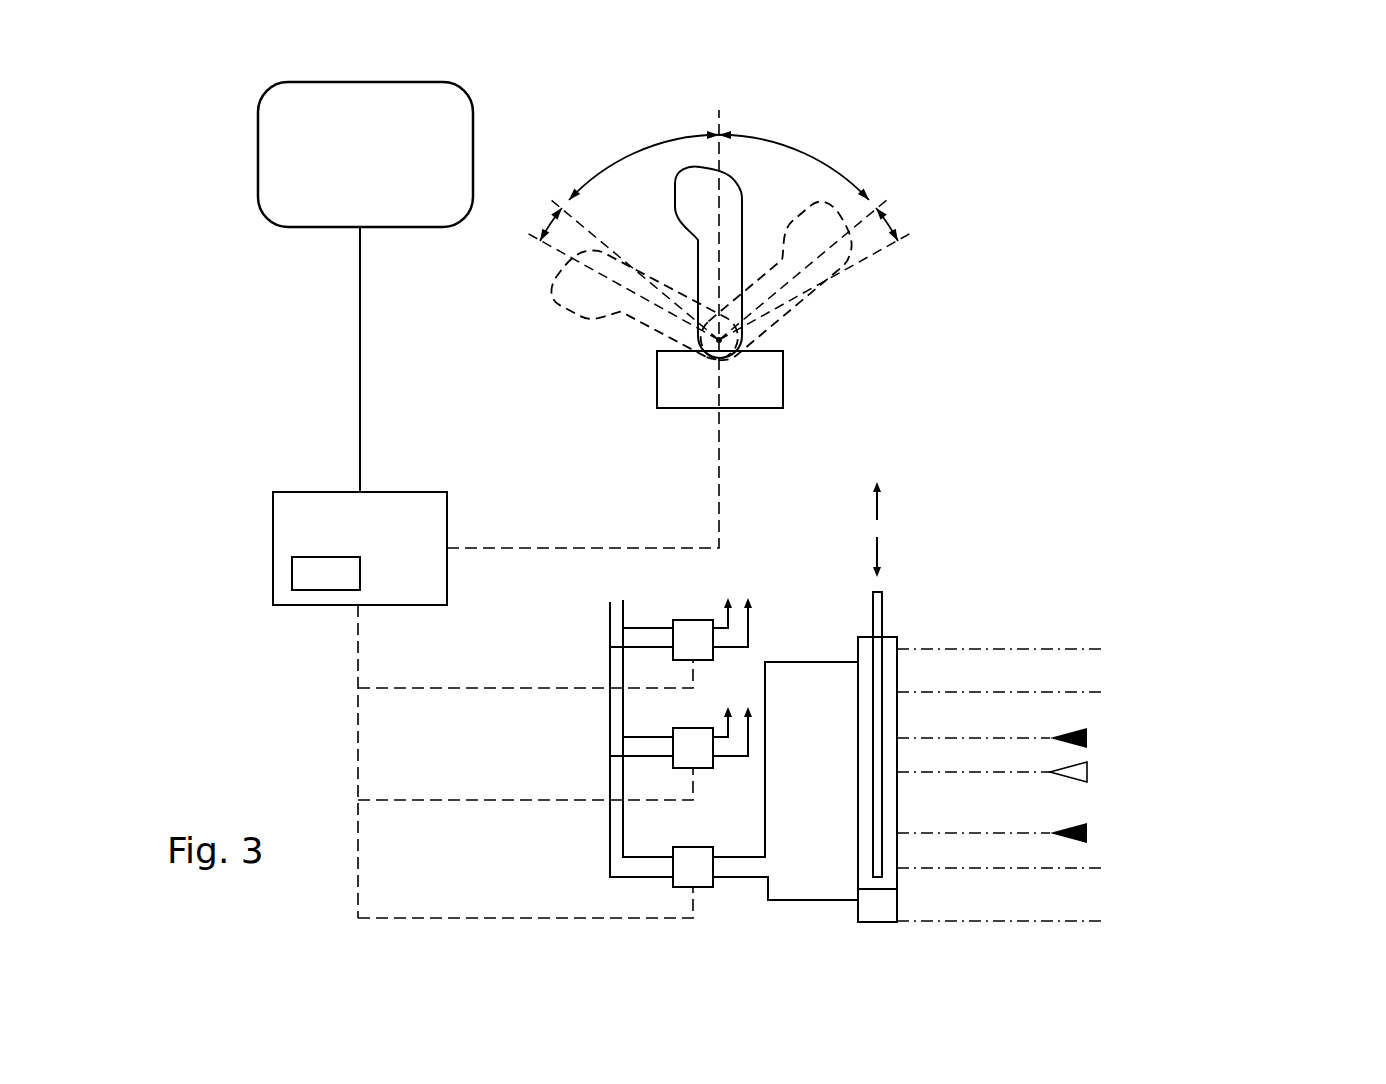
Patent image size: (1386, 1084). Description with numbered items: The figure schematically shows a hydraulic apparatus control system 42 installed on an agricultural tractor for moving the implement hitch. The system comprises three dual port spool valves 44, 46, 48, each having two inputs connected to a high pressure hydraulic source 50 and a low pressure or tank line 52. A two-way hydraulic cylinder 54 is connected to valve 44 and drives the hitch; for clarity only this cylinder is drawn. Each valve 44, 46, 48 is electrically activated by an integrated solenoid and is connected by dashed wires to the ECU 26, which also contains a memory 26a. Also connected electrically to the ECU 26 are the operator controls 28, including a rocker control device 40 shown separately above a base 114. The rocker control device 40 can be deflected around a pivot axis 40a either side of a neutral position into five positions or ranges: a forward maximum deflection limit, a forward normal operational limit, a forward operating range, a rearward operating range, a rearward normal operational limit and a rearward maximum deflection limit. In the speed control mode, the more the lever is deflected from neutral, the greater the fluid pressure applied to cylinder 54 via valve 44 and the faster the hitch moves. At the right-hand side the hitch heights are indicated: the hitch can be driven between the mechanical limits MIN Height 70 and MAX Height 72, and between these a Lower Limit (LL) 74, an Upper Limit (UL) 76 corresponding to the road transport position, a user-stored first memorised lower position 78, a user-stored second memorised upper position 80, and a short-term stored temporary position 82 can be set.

The operator controls 28 is at (457, 112).
The ECU 26 is at (440, 510).
The memory 26a is at (320, 587).
The rocker control device 40 is at (677, 398).
The pivot axis 40a is at (700, 348).
The joystick base / position sensor 114 is at (773, 388).
The hydraulic apparatus control system 42 is at (958, 146).
The high pressure hydraulic source 50 is at (607, 602).
The low pressure line 52 is at (623, 603).
The dual port spool valve 48 is at (702, 630).
The dual port spool valve 46 is at (697, 738).
The dual port spool valve 44 is at (700, 853).
The hydraulic cylinder 54 is at (872, 910).
The MAX Height 72 is at (980, 649).
The Upper Limit (UL) 76 is at (980, 692).
The Memo_2 80 is at (986, 738).
The Temp 82 is at (986, 772).
The Memo_1 78 is at (983, 833).
The Lower Limit (LL) 74 is at (983, 868).
The MIN Height 70 is at (983, 921).